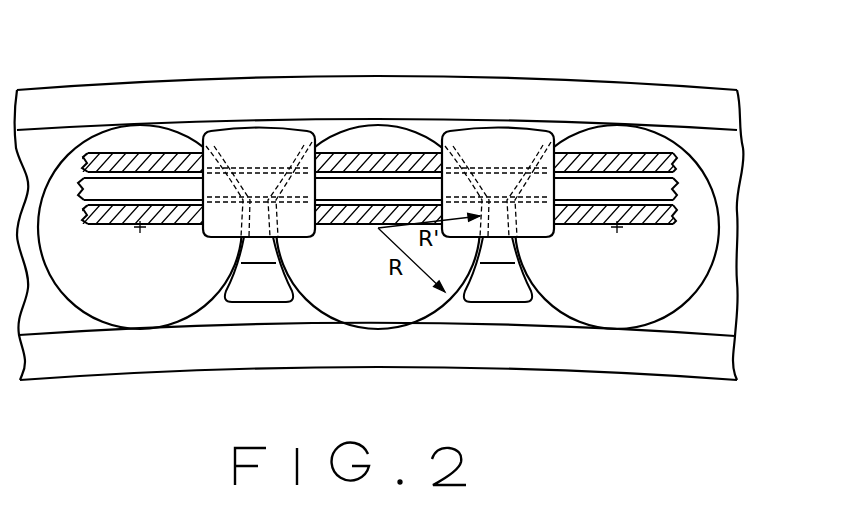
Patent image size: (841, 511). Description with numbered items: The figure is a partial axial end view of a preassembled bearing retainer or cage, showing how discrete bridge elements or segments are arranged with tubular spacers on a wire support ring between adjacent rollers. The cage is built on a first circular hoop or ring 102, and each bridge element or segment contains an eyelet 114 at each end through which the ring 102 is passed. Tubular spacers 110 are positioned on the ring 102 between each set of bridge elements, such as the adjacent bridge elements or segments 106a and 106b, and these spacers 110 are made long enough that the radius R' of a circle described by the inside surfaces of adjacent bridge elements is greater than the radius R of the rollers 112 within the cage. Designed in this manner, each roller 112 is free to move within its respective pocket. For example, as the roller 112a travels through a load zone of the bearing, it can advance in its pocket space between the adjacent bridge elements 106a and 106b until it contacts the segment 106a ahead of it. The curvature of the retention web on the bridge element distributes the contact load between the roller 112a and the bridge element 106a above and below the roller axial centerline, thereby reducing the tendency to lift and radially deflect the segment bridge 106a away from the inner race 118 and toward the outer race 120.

The first circular ring 102 is at (640, 187).
The bridge element 106a is at (263, 142).
The bridge element 106b is at (495, 137).
The tubular spacer 110 is at (141, 162).
The roller 112 is at (134, 290).
The roller 112a is at (365, 288).
The eyelet 114 is at (253, 203).
The inner race 118 is at (608, 356).
The outer race 120 is at (700, 117).